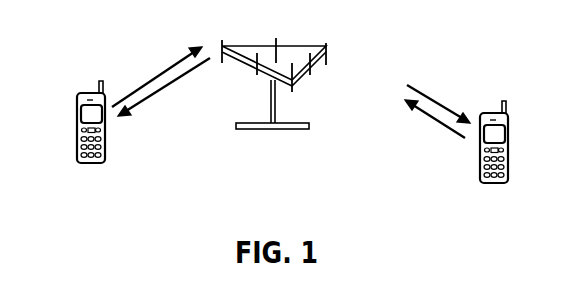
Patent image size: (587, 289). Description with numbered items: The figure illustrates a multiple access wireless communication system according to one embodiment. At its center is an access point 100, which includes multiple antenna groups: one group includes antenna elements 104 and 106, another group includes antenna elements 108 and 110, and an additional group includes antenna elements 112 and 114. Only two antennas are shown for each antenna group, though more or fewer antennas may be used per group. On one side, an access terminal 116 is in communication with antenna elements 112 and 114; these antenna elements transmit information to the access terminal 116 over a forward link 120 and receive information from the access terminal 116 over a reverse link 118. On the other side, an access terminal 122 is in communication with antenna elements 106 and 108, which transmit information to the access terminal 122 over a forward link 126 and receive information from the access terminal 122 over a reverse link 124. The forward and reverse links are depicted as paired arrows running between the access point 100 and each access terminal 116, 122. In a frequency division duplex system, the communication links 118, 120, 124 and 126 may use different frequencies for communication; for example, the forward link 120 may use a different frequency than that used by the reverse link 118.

The access point 100 is at (278, 124).
The antenna element 104 is at (296, 90).
The antenna element 106 is at (313, 73).
The antenna element 108 is at (329, 53).
The antenna element 110 is at (279, 42).
The antenna element 112 is at (219, 44).
The antenna element 114 is at (255, 73).
The access terminal 116 is at (78, 115).
The reverse link 118 is at (163, 70).
The forward link 120 is at (153, 90).
The access terminal 122 is at (507, 132).
The reverse link 124 is at (442, 125).
The forward link 126 is at (433, 103).